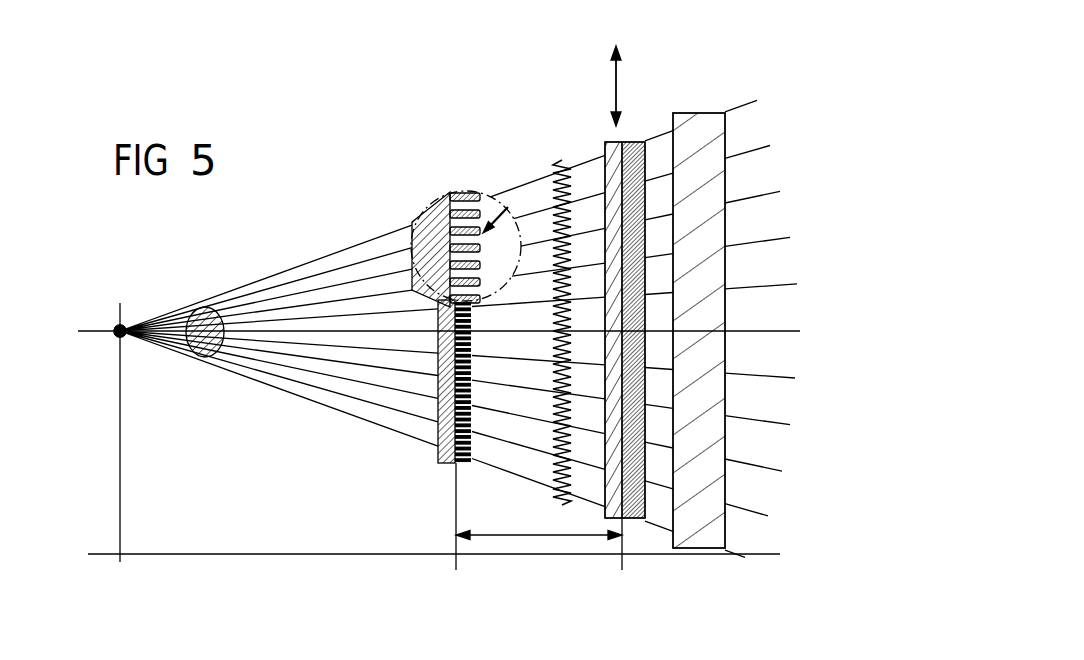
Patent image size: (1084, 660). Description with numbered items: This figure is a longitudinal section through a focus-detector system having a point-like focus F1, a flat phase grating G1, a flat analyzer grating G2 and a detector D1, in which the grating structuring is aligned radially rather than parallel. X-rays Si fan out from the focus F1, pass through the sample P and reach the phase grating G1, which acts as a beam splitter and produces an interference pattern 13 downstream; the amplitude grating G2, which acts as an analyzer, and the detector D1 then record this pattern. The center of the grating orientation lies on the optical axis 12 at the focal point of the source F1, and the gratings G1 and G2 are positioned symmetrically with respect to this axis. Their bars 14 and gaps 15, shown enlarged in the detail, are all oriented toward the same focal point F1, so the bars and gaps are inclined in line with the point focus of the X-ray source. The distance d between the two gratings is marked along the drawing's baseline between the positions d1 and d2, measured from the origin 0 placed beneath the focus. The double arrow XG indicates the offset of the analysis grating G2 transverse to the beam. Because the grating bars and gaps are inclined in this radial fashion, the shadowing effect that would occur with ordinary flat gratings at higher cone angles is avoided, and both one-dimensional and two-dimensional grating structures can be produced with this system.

The axis 12 is at (103, 336).
The interference pattern 13 is at (560, 162).
The bars 14 is at (443, 190).
The gaps 15 is at (498, 202).
The focus F1 is at (117, 328).
The sample P is at (205, 308).
The X-ray Si is at (285, 392).
The phase grating G1 is at (443, 468).
The analyzer grating G2 is at (639, 142).
The detector D1 is at (701, 113).
The offset of the analysis grating XG is at (612, 71).
The distance d is at (503, 532).
The position of grating G1 d1 is at (458, 537).
The position of grating G2 d2 is at (623, 565).
The origin 0 is at (439, 440).